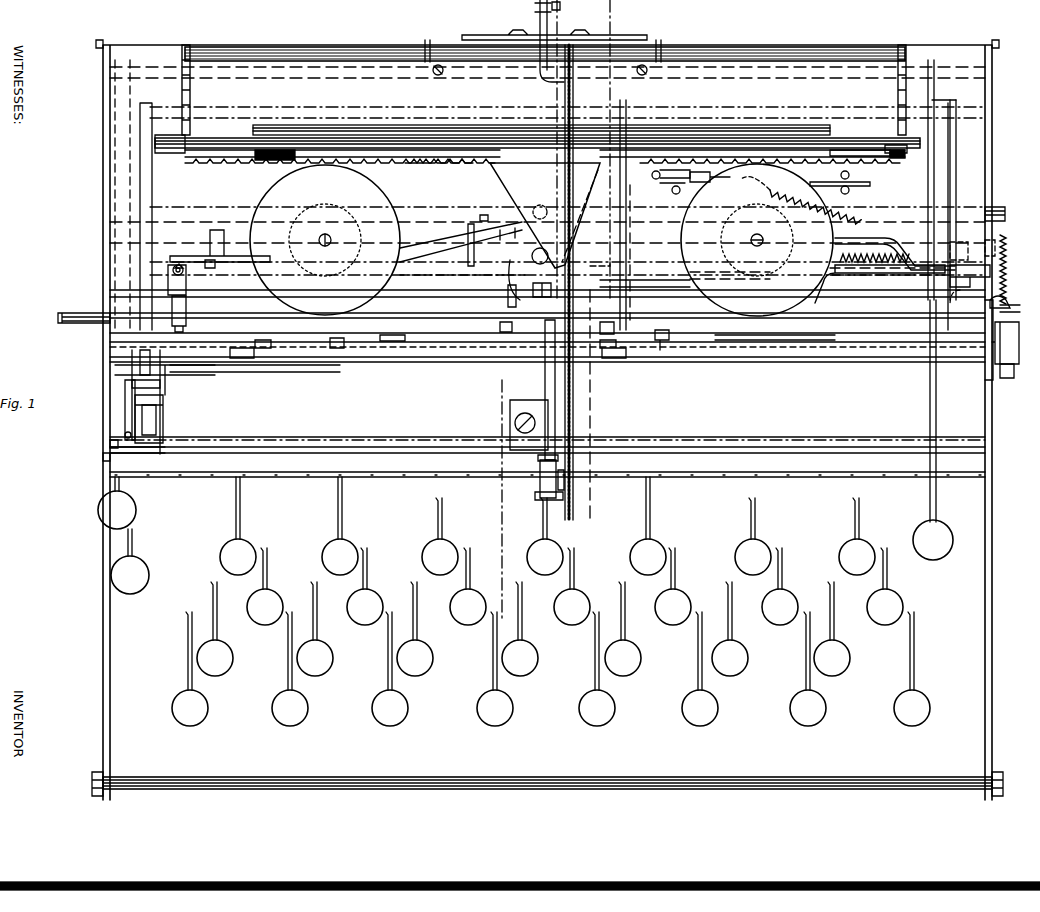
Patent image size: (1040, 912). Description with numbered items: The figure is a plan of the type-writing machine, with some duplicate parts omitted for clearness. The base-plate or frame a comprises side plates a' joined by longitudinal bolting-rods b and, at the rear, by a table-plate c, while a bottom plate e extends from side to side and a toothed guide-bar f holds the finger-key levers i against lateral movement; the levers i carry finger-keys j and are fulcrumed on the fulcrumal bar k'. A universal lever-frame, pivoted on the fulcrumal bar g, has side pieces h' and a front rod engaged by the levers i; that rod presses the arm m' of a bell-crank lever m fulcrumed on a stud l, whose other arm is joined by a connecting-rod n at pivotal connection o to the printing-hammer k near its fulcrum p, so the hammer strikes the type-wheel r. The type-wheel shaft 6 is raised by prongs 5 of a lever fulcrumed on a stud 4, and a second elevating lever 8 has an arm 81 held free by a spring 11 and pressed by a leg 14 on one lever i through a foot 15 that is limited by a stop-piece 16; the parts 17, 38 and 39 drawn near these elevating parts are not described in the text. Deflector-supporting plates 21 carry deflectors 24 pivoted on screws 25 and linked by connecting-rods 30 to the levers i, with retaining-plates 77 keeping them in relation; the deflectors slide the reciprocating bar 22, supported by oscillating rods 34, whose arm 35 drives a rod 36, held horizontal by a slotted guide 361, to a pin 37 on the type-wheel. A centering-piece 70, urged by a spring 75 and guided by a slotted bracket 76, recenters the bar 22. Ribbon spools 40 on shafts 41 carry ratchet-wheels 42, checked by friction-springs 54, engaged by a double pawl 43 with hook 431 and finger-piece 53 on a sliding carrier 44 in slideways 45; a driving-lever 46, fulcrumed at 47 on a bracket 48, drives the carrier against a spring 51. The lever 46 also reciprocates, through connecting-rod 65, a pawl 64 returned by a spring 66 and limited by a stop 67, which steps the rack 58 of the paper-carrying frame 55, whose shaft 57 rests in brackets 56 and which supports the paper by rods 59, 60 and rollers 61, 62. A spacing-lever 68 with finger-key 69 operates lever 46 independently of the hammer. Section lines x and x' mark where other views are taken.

The base-plate or frame a is at (547, 422).
The side plates a' is at (547, 369).
The fulcrum of hammer p is at (539, 784).
The shaft 57 is at (362, 55).
The sliding paper-carrying frame 55 is at (200, 72).
The slideways or brackets 56 is at (427, 45).
The printing-hammer k is at (554, 41).
The pivotal connection o is at (562, 12).
The section line x is at (583, 150).
The section line x' is at (543, 455).
The longitudinal bolting-rods b is at (940, 68).
The fulcrumal bar k' is at (547, 195).
The roller 62 is at (696, 128).
The roller 61 is at (262, 162).
The rack 58 is at (450, 176).
The rod 60 is at (870, 158).
The rod 59 is at (899, 156).
The table-plate c is at (552, 215).
The drum or spool 40 is at (541, 240).
The ratchet-wheels 42 is at (344, 208).
The spool-shafts 41 is at (319, 240).
The hook 431 is at (820, 279).
The side pieces h' is at (523, 257).
The retaining-plates 77 is at (834, 314).
The reciprocating bar 22 is at (850, 344).
The toothed guide-bar f is at (400, 475).
The bottom plate e is at (547, 429).
The type-wheel r is at (545, 213).
The pin 37 is at (536, 204).
The type-wheel shaft 6 is at (540, 248).
The prongs 5 is at (530, 248).
The rod 36 is at (450, 245).
The slotted guide 361 is at (472, 224).
The spring s is at (574, 388).
The arm of bell-crank lever m' is at (526, 390).
The stud l is at (535, 462).
The bell-crank lever m is at (539, 480).
The connecting-rod n is at (560, 484).
The finger-piece 53 is at (542, 297).
The stud 4 is at (510, 296).
The double pawl 43 is at (648, 286).
The sliding carrier 44 is at (652, 288).
The friction-springs 54 is at (664, 224).
The stop 67 is at (654, 180).
The pawl 64 is at (662, 195).
The spring 66 is at (856, 208).
The connecting-rod 65 is at (900, 248).
The spring 51 is at (894, 250).
The bracket or fixture 48 is at (995, 260).
The driving-lever 46 is at (990, 266).
The spring 75 is at (1000, 278).
The fulcrum 47 is at (996, 288).
The pin 39 is at (1020, 307).
The fulcrumal bar g is at (1003, 210).
The centering-piece 70 is at (1012, 350).
The slotted bracket 76 is at (1012, 376).
The spacing-lever 68 is at (936, 500).
The finger-key 69 is at (933, 540).
The oscillating rods 34 is at (82, 313).
The roller 38 is at (198, 254).
The arm 35 is at (186, 300).
The slideways 45 is at (204, 256).
The bar 17 is at (156, 388).
The spring 11 is at (224, 378).
The type-wheel-elevating lever 8 is at (164, 415).
The arm 81 is at (164, 428).
The stop-piece 16 is at (140, 422).
The leg 14 is at (126, 435).
The foot 15 is at (150, 440).
The deflectors 24 is at (268, 372).
The connecting-rod 30 is at (338, 362).
The screw 25 is at (408, 366).
The deflector-supporting plates 21 is at (718, 360).
The finger-keys j is at (514, 608).
The finger-key levers i is at (242, 508).